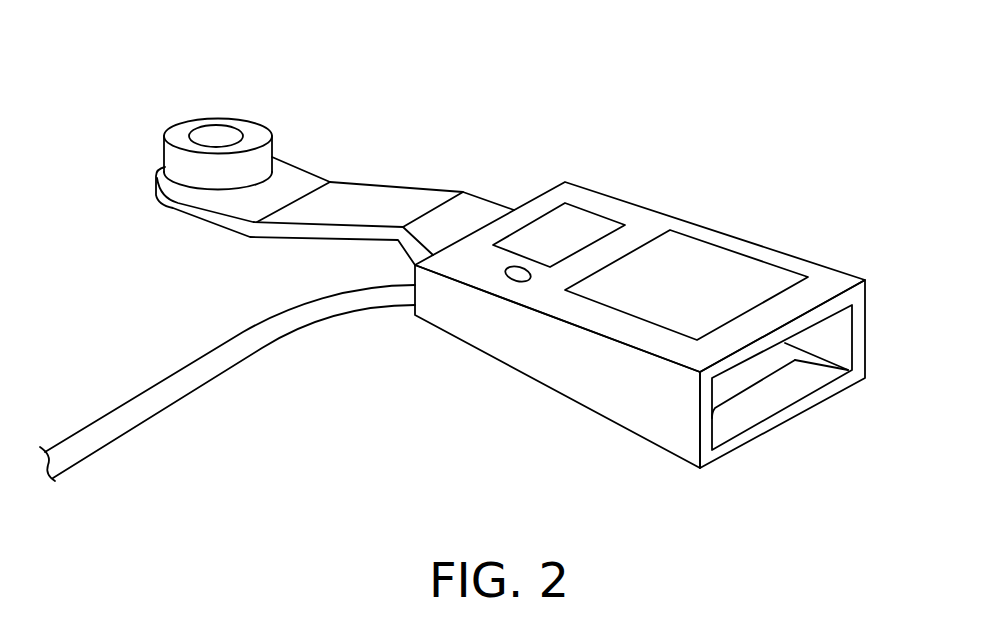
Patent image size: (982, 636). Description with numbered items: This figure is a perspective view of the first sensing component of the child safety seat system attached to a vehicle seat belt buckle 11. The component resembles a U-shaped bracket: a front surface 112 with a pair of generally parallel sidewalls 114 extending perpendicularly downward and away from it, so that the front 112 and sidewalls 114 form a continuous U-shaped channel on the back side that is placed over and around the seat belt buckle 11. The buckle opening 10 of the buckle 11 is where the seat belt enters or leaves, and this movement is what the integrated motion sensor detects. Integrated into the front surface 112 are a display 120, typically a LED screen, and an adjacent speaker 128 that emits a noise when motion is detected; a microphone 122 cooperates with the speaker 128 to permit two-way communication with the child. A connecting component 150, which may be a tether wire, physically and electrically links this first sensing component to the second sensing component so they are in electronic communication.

The buckle opening 10 is at (820, 413).
The seat belt buckle 11 is at (387, 203).
The front surface 112 is at (596, 191).
The sidewalls 114 is at (598, 395).
The display 120 is at (692, 265).
The microphone 122 is at (506, 273).
The speaker 128 is at (552, 240).
The connecting component 150 is at (273, 337).